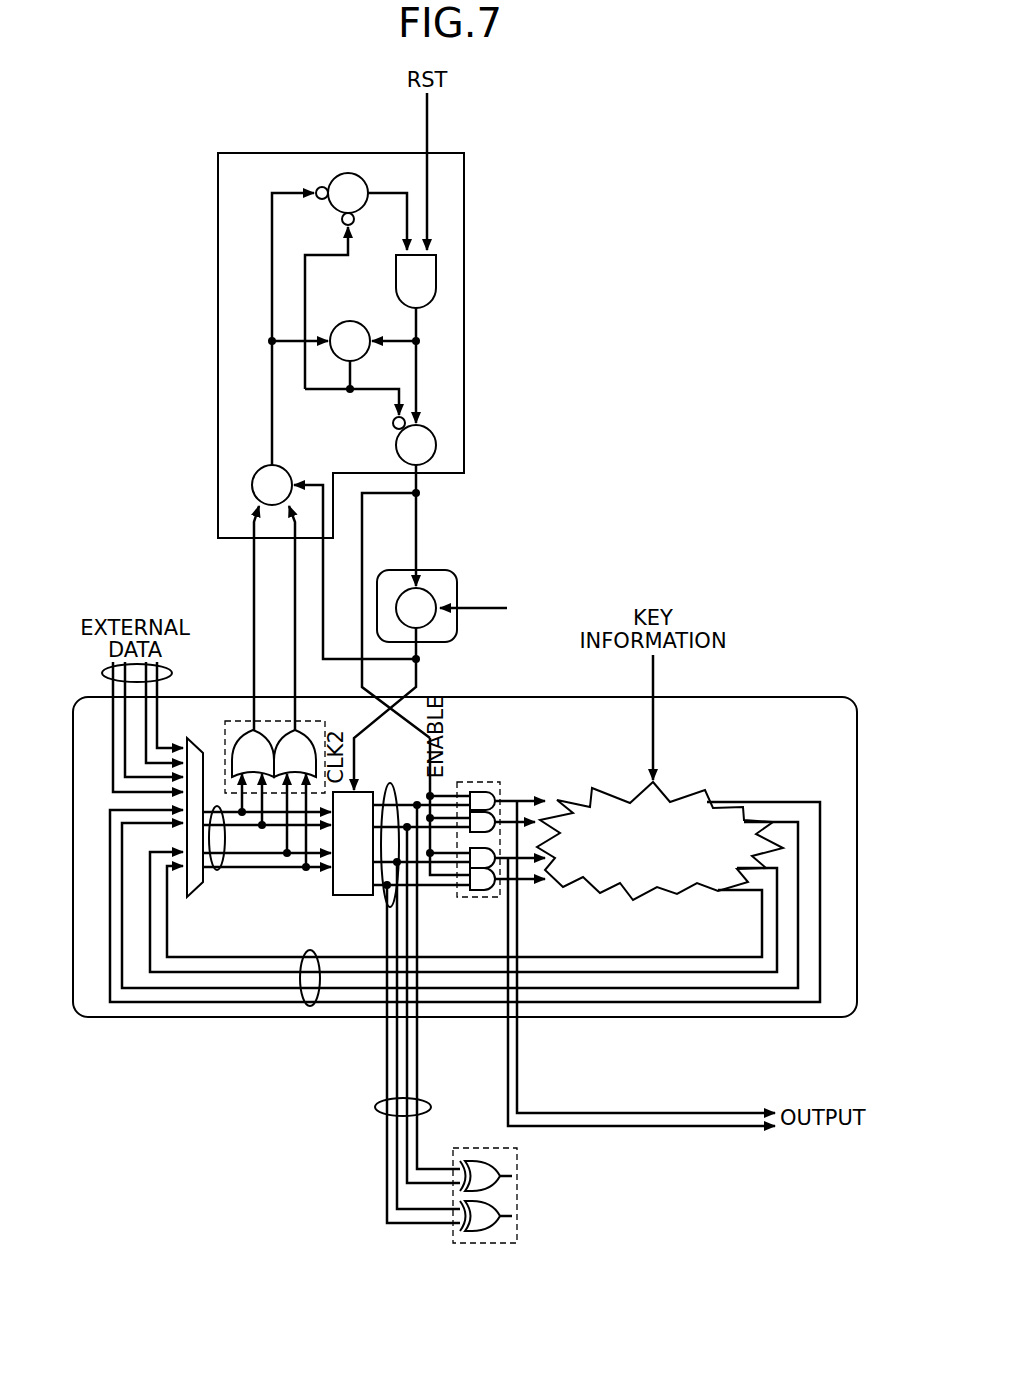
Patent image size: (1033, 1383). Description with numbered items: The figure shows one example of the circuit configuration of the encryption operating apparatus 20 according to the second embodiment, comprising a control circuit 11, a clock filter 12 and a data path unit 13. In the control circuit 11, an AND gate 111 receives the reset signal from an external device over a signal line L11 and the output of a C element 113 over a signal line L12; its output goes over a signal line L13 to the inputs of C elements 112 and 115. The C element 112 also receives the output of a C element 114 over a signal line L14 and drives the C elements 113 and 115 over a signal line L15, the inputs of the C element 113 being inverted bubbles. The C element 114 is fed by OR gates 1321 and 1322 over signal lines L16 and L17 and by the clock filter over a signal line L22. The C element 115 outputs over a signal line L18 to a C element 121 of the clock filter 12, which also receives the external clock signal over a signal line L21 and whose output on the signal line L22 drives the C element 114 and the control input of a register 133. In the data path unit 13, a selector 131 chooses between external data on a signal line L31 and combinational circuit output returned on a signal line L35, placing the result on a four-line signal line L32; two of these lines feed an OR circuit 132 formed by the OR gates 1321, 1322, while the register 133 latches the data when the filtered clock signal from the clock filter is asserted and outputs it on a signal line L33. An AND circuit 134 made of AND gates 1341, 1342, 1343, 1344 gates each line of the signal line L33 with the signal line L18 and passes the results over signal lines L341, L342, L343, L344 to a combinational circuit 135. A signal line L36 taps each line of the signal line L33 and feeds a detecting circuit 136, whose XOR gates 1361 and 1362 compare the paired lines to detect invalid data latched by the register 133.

The encryption operating apparatus 20 is at (677, 156).
The control circuit 11 is at (465, 233).
The AND gate 111 is at (437, 266).
The C element 112 is at (350, 321).
The C element 113 is at (348, 172).
The C element 114 is at (252, 488).
The C element 115 is at (433, 436).
The clock filter 12 is at (444, 572).
The C element 121 is at (438, 596).
The data path unit 13 is at (793, 697).
The selector 131 is at (187, 738).
The OR circuit 132 is at (274, 752).
The OR gate 1321 is at (254, 728).
The OR gate 1322 is at (300, 728).
The register 133 is at (333, 888).
The AND circuit 134 is at (482, 838).
The AND gate 1341 is at (492, 796).
The AND gate 1342 is at (496, 822).
The AND gate 1343 is at (462, 868).
The AND gate 1344 is at (487, 890).
The combinational circuit 135 is at (667, 793).
The detecting circuit 136 is at (515, 1169).
The XOR gate 1361 is at (500, 1163).
The XOR gate 1362 is at (500, 1204).
The signal line L11 is at (428, 112).
The signal line L12 is at (390, 192).
The signal line L13 is at (420, 320).
The signal line L14 is at (272, 392).
The signal line L15 is at (353, 372).
The signal line L16 is at (254, 566).
The signal line L17 is at (295, 600).
The signal line L18 is at (420, 490).
The signal line L21 is at (488, 604).
The signal line L22 is at (420, 652).
The signal line L31 is at (100, 674).
The signal line L32 is at (221, 870).
The signal line L33 is at (388, 906).
The signal line L341 is at (542, 803).
The signal line L342 is at (536, 820).
The signal line L343 is at (527, 862).
The signal line L344 is at (522, 882).
The signal line L35 is at (313, 1007).
The signal line L36 is at (378, 1108).